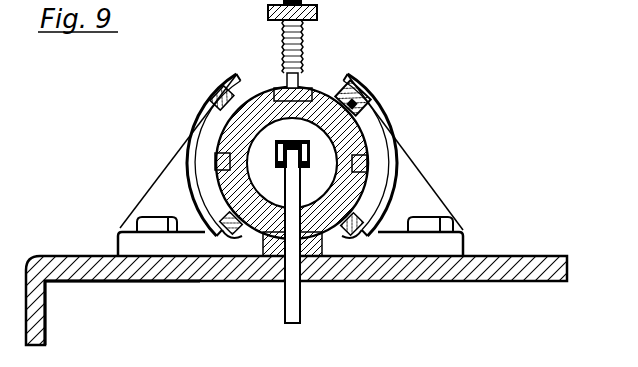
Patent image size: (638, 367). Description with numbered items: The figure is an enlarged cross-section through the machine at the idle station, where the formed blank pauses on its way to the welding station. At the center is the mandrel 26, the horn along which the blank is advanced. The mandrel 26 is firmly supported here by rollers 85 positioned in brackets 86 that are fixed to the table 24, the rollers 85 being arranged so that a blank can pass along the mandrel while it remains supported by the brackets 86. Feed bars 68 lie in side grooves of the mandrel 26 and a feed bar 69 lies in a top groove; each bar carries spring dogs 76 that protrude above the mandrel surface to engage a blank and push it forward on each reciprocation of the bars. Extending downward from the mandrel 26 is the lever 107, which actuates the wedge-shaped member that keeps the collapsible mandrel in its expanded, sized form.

The table 24 is at (520, 268).
The mandrel 26 is at (328, 96).
The feed bars 68 is at (392, 133).
The feed bar 69 is at (301, 88).
The spring dogs 76 is at (367, 160).
The rollers 85 is at (362, 93).
The brackets 86 is at (162, 188).
The lever 107 is at (290, 308).